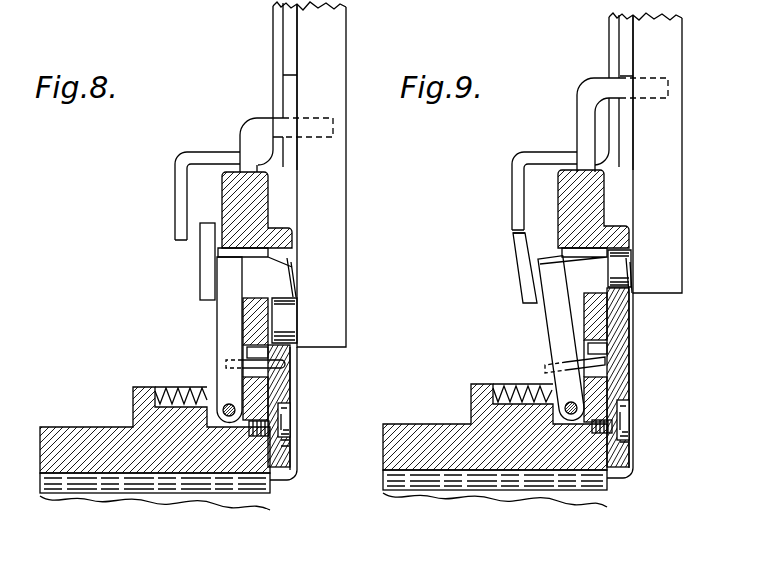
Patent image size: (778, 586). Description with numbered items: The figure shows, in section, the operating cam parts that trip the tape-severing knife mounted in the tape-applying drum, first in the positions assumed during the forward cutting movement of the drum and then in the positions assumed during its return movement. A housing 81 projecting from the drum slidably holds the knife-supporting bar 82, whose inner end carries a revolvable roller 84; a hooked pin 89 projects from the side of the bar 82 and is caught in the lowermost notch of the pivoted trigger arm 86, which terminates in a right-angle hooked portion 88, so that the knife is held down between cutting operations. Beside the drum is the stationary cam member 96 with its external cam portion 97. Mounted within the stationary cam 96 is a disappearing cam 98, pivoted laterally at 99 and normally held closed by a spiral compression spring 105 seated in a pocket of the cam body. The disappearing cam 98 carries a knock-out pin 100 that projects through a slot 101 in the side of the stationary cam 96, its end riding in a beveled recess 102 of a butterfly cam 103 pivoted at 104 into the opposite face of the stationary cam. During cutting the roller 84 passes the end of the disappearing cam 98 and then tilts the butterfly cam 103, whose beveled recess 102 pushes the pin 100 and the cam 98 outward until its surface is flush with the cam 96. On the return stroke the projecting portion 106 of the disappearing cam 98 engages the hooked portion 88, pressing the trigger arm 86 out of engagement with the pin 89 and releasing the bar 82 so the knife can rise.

In FIG. 8, the housing 81 is at (292, 62).
In FIG. 9, the housing 81 is at (625, 52).
In FIG. 8, the knife-supporting bar 82 is at (332, 243).
In FIG. 9, the knife-supporting bar 82 is at (670, 202).
In FIG. 8, the roller 84 is at (293, 348).
In FIG. 9, the roller 84 is at (628, 275).
In FIG. 8, the trigger arm 86 is at (278, 48).
In FIG. 9, the trigger arm 86 is at (615, 50).
In FIG. 8, the hooked portion 88 is at (178, 202).
In FIG. 9, the hooked portion 88 is at (513, 193).
In FIG. 8, the hooked pin 89 is at (255, 124).
In FIG. 9, the hooked pin 89 is at (583, 123).
In FIG. 8, the stationary cam member 96 is at (148, 462).
In FIG. 9, the stationary cam member 96 is at (460, 457).
In FIG. 8, the external cam portion 97 is at (230, 193).
In FIG. 9, the external cam portion 97 is at (568, 208).
In FIG. 8, the disappearing cam 98 is at (227, 328).
In FIG. 9, the disappearing cam 98 is at (548, 328).
In FIG. 8, the pivot 99 is at (233, 414).
In FIG. 9, the pivot 99 is at (574, 415).
In FIG. 8, the knock-out pin 100 is at (288, 393).
In FIG. 9, the knock-out pin 100 is at (627, 382).
In FIG. 8, the slot 101 is at (258, 358).
In FIG. 9, the slot 101 is at (587, 348).
In FIG. 8, the beveled recess 102 is at (288, 370).
In FIG. 9, the beveled recess 102 is at (620, 367).
In FIG. 8, the butterfly cam 103 is at (293, 410).
In FIG. 9, the butterfly cam 103 is at (625, 338).
In FIG. 8, the pivot 104 is at (290, 445).
In FIG. 9, the pivot 104 is at (627, 437).
In FIG. 8, the spiral compression spring 105 is at (168, 388).
In FIG. 9, the spiral compression spring 105 is at (495, 387).
In FIG. 8, the projecting portion 106 is at (210, 248).
In FIG. 9, the projecting portion 106 is at (522, 257).